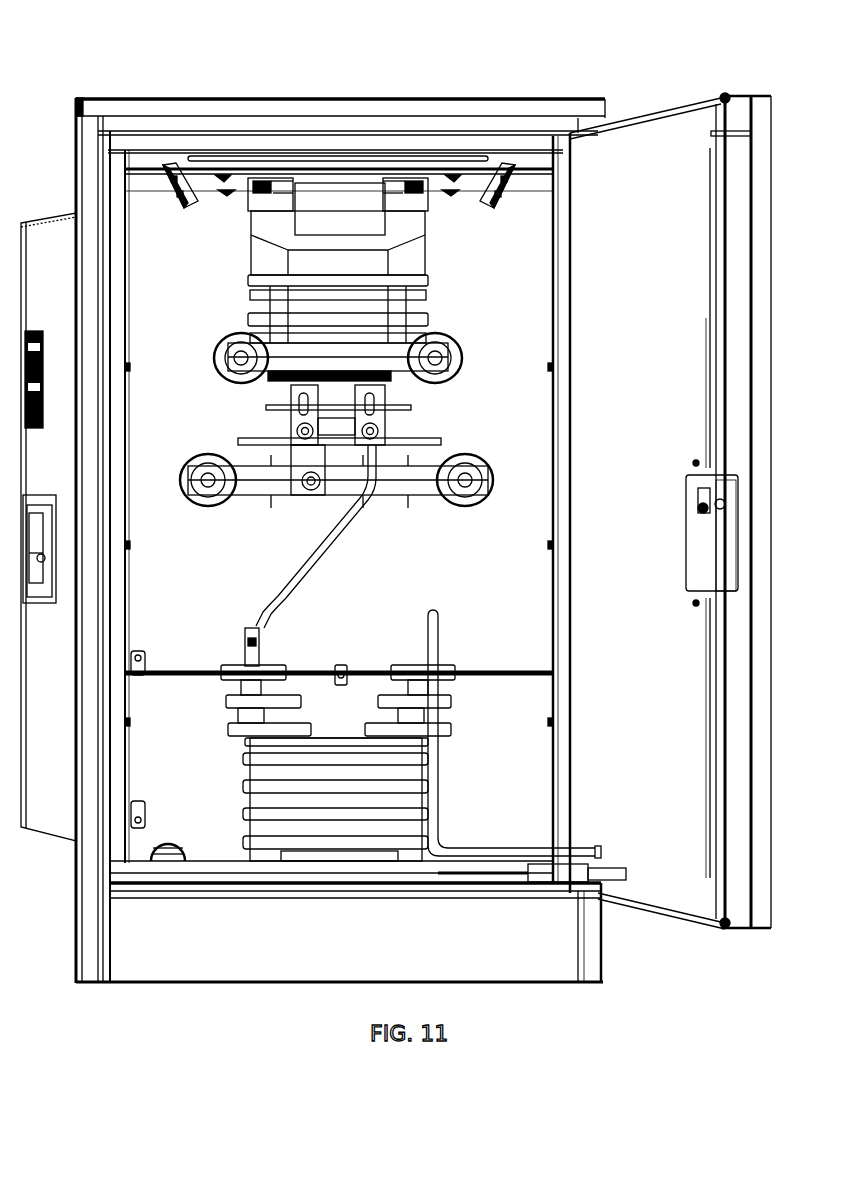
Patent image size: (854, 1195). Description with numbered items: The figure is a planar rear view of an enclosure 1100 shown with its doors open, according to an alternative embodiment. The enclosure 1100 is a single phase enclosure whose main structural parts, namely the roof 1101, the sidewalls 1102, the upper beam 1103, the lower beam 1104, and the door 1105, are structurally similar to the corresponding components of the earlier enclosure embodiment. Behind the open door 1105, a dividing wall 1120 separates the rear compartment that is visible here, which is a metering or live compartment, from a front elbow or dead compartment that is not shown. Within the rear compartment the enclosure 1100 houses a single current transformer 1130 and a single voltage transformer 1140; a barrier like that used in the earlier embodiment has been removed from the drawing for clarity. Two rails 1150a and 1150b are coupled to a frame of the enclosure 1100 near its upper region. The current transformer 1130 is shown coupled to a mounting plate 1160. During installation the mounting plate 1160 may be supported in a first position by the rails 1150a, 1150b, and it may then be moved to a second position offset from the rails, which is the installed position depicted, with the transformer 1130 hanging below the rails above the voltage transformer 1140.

The enclosure 1100 is at (122, 52).
The roof 1101 is at (378, 96).
The sidewalls 1102 is at (88, 880).
The upper beam 1103 is at (128, 143).
The lower beam 1104 is at (230, 967).
The door 1105 is at (680, 895).
The dividing wall 1120 is at (530, 220).
The current transformer 1130 is at (272, 263).
The voltage transformer 1140 is at (410, 808).
The rail 1150a is at (178, 173).
The rail 1150b is at (508, 172).
The mounting plate 1160 is at (212, 188).